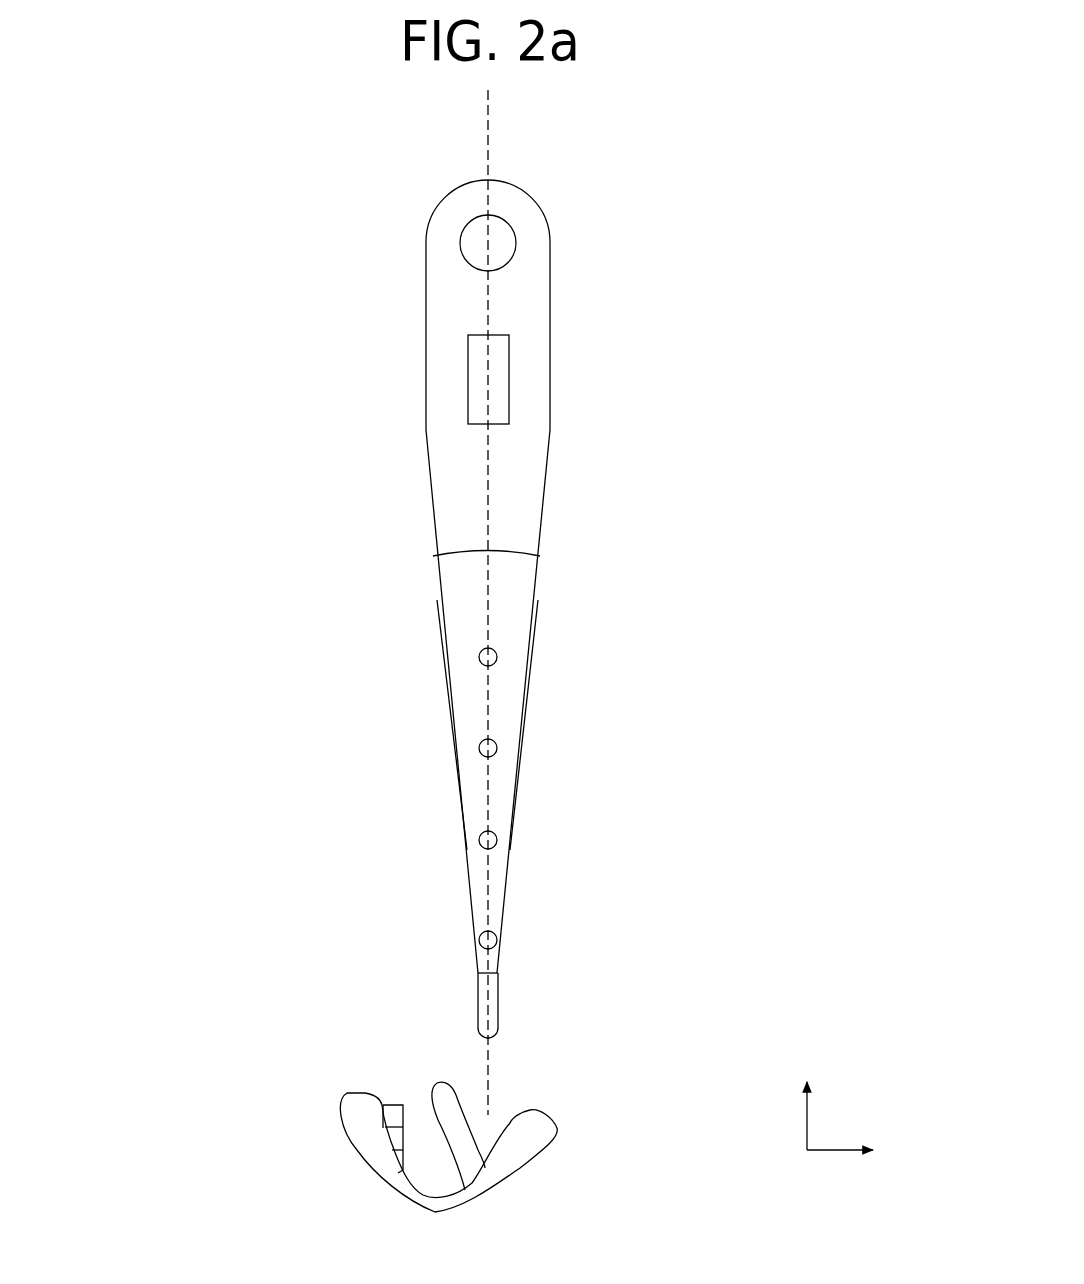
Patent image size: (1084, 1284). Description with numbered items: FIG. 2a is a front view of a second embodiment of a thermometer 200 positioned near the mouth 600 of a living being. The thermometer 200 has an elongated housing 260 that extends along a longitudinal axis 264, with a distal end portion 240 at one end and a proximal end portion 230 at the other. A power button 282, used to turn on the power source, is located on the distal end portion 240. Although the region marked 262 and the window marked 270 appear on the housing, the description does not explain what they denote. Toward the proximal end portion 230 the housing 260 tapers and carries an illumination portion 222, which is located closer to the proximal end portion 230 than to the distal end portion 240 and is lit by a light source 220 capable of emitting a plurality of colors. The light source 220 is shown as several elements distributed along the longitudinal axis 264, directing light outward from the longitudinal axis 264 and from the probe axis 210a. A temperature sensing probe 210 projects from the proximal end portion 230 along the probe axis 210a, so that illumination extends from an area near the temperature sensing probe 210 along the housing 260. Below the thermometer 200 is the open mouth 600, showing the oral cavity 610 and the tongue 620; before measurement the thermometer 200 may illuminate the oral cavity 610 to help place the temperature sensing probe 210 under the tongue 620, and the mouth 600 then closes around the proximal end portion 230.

The thermometer 200 is at (180, 180).
The longitudinal axis 264 is at (488, 148).
The probe axis 210a is at (488, 167).
The distal end portion 240 is at (405, 242).
The power button 282 is at (490, 245).
The window 270 is at (490, 387).
The body portion 262 is at (428, 417).
The housing 260 is at (545, 512).
The illumination portion 222 is at (515, 690).
The light source 220 is at (485, 838).
The proximal end portion 230 is at (460, 943).
The temperature sensing probe 210 is at (493, 1005).
The mouth 600 is at (540, 1140).
The oral cavity 610 is at (416, 1104).
The tongue 620 is at (472, 1167).